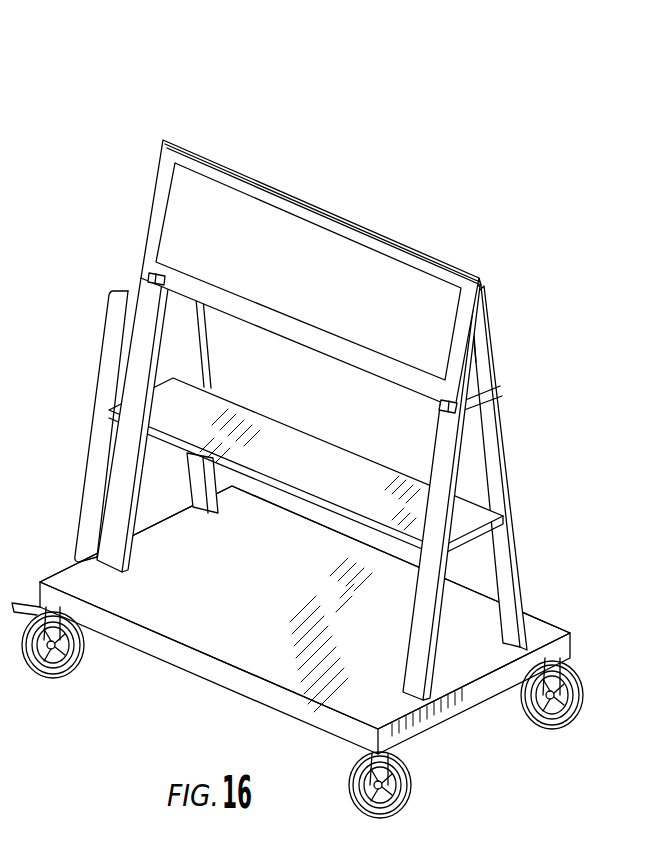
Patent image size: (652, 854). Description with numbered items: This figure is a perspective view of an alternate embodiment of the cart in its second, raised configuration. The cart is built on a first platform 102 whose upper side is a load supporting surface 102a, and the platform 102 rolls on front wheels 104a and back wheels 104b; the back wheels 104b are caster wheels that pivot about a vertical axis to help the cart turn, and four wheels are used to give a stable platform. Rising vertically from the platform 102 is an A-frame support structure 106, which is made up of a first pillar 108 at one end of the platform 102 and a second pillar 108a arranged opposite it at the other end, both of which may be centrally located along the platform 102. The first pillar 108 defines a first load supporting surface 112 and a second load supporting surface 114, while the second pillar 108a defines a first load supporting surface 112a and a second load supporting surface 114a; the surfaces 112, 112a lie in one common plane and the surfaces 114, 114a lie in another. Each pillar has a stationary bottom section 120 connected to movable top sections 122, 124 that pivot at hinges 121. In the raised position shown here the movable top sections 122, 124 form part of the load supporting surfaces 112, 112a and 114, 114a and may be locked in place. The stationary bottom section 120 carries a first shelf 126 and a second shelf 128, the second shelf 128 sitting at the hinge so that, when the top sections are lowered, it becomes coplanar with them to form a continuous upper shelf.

The first platform 102 is at (237, 681).
The load supporting surface 102a is at (177, 628).
The front wheels 104a is at (532, 720).
The back wheels 104b is at (55, 680).
The A-frame support structure 106 is at (337, 396).
The first pillar 108 is at (552, 468).
The second pillar 108a is at (155, 406).
The first load supporting surface 112 is at (408, 625).
The first load supporting surface 112a is at (127, 413).
The second load supporting surface 114 is at (518, 542).
The second load supporting surface 114a is at (207, 357).
The stationary bottom section 120 is at (82, 474).
The hinges 121 is at (143, 277).
The movable top section 122 is at (286, 250).
The movable top section 124 is at (240, 168).
The first shelf 126 is at (330, 485).
The second shelf 128 is at (478, 390).